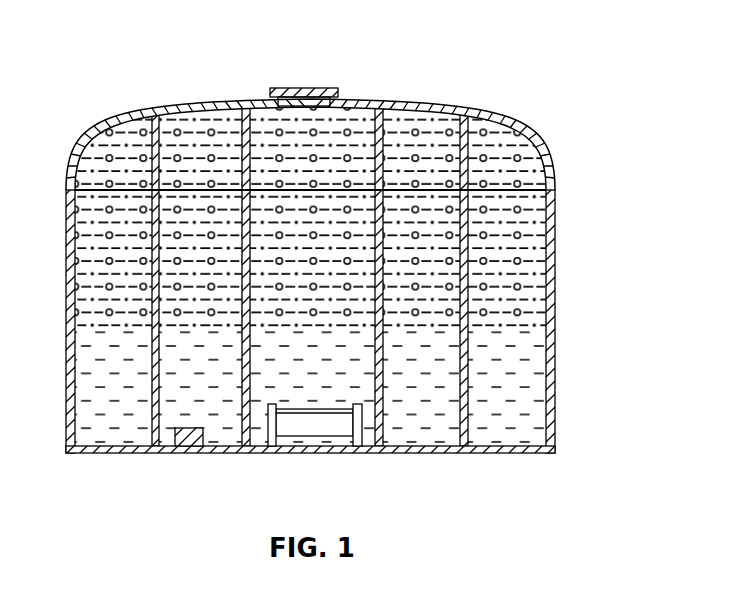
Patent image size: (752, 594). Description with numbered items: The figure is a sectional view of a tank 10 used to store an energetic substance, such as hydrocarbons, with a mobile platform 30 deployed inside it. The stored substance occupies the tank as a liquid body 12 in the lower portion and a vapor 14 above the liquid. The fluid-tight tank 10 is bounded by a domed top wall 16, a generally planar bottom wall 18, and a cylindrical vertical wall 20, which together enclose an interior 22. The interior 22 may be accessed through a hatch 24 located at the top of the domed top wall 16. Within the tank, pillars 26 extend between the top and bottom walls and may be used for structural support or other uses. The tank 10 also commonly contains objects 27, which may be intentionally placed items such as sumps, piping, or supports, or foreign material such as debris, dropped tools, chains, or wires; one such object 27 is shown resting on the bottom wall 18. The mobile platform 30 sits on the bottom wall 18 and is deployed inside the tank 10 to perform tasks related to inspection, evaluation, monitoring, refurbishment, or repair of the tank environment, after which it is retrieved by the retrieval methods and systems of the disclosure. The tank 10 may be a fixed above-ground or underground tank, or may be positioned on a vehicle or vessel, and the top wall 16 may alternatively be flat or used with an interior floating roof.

The tank 10 is at (341, 259).
The liquid body 12 is at (535, 371).
The vapor 14 is at (540, 254).
The domed top wall 16 is at (432, 108).
The bottom wall 18 is at (403, 451).
The cylindrical vertical wall 20 is at (553, 331).
The interior 22 is at (500, 166).
The hatch 24 is at (297, 96).
The pillars 26 is at (152, 158).
The objects 27 is at (188, 447).
The mobile platform 30 is at (323, 425).